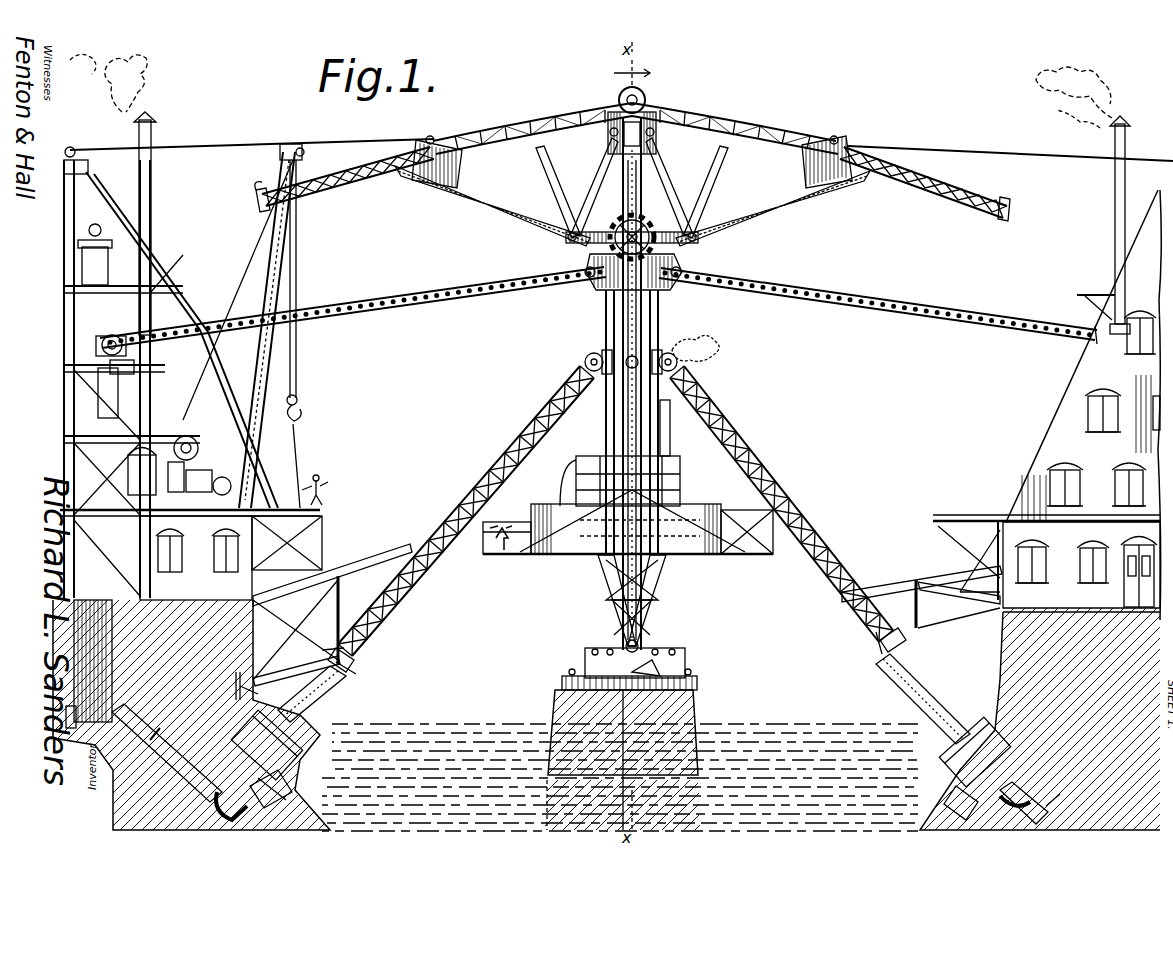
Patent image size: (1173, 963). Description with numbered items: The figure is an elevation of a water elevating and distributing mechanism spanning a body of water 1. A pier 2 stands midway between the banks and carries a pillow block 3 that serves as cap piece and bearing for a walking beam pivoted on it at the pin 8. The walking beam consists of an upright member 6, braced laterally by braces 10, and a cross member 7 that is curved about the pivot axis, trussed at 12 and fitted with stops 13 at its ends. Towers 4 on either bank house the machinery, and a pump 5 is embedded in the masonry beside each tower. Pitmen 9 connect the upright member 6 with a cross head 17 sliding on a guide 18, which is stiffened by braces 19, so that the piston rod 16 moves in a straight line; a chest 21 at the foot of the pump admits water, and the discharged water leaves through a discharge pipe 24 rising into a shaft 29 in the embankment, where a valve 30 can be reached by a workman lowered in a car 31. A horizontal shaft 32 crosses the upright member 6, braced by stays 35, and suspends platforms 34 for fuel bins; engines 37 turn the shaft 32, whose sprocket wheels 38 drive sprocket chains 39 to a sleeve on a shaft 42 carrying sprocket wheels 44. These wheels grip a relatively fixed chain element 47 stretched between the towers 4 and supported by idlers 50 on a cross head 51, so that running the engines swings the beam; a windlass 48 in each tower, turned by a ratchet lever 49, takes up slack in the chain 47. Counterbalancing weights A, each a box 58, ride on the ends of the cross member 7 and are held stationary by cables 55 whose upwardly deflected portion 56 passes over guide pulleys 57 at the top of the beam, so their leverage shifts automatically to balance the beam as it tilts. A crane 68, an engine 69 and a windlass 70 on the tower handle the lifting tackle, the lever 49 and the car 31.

The body of water 1 is at (452, 740).
The pier 2 is at (556, 708).
The pillow block 3 is at (676, 664).
The tower 4 is at (62, 414).
The pump 5 is at (240, 816).
The upright member 6 is at (645, 330).
The cross member 7 is at (362, 182).
The pin 8 is at (640, 642).
The pitman 9 is at (490, 470).
The lateral braces 10 is at (608, 610).
The trussing 12 is at (492, 210).
The stop 13 is at (256, 196).
The piston rod 16 is at (332, 696).
The cross head 17 is at (358, 652).
The guide 18 is at (388, 556).
The brace 19 is at (334, 606).
The chest 21 is at (288, 806).
The discharge pipe 24 is at (1064, 828).
The shaft 29 is at (80, 632).
The valve 30 is at (112, 704).
The car 31 is at (80, 272).
The horizontal shaft 32 is at (586, 368).
The platform 34 is at (548, 558).
The stay 35 is at (570, 240).
The engine 37 is at (604, 442).
The sprocket wheel 38 is at (702, 350).
The sprocket chain 39 is at (606, 332).
The shaft 42 is at (625, 285).
The sprocket wheel 44 is at (652, 222).
The chain element 47 is at (903, 316).
The windlass 48 is at (98, 346).
The lever 49 is at (124, 360).
The idler 50 is at (584, 284).
The cross head 51 is at (680, 284).
The cable 55 is at (248, 136).
The upwardly deflected portion 56 is at (566, 116).
The guide pulley 57 is at (648, 96).
The box 58 is at (632, 168).
The crane 68 is at (262, 350).
The engine 69 is at (290, 438).
The windlass 70 is at (284, 402).
The counterbalancing weight A is at (440, 140).